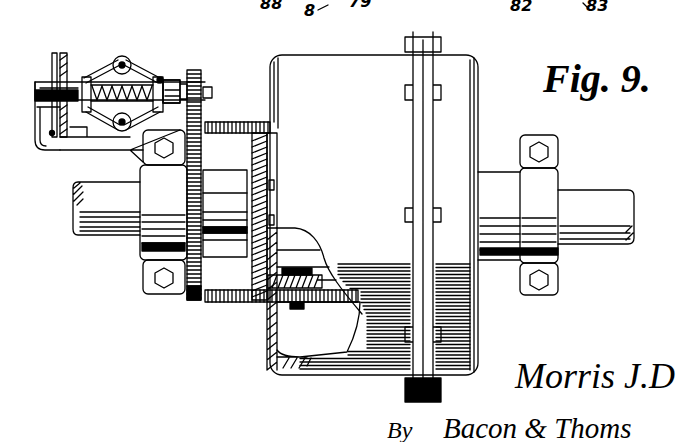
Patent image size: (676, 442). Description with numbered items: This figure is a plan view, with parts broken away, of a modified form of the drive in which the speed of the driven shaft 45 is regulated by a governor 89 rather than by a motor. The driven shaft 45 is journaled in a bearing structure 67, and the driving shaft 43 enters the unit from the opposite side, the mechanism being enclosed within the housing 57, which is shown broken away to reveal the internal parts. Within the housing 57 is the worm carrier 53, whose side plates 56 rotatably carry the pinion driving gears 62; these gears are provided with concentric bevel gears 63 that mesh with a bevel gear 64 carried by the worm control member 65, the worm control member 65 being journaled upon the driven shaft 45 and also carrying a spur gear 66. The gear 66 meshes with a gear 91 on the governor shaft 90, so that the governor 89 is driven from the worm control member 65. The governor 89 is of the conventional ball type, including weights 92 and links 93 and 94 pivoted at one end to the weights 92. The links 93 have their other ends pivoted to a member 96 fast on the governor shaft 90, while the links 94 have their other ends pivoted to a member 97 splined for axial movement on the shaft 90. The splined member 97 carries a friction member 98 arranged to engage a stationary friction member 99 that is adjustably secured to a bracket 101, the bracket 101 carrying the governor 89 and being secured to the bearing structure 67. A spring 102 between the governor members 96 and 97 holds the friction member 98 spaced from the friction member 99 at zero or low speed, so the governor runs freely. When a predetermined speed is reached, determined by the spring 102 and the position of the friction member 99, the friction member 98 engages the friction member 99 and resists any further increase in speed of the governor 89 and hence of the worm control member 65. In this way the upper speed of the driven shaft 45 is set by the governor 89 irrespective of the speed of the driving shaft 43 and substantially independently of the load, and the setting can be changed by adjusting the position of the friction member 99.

The driving shaft 43 is at (603, 206).
The driven shaft 45 is at (104, 238).
The worm carrier 53 is at (302, 242).
The side plates 56 is at (320, 265).
The housing 57 is at (352, 64).
The pinion driving gears 62 is at (226, 124).
The bevel gears 63 is at (326, 290).
The bevel gear 64 is at (268, 212).
The worm control member 65 is at (226, 252).
The spur gear 66 is at (193, 309).
The bearing structure 67 is at (138, 258).
The governor 89 is at (167, 72).
The governor shaft 90 is at (212, 93).
The gear 91 is at (203, 76).
The weights 92 is at (124, 56).
The links 93 is at (141, 67).
The links 94 is at (88, 78).
The member 96 is at (170, 92).
The splined member 97 is at (72, 82).
The friction member 98 is at (52, 59).
The stationary friction member 99 is at (50, 152).
The bracket 101 is at (75, 156).
The spring 102 is at (110, 88).